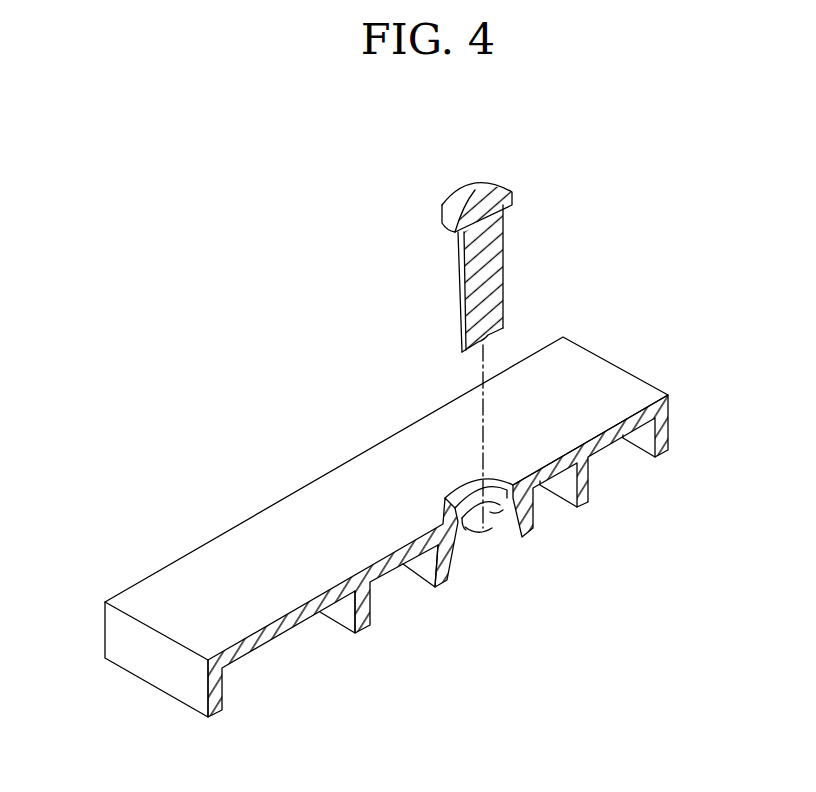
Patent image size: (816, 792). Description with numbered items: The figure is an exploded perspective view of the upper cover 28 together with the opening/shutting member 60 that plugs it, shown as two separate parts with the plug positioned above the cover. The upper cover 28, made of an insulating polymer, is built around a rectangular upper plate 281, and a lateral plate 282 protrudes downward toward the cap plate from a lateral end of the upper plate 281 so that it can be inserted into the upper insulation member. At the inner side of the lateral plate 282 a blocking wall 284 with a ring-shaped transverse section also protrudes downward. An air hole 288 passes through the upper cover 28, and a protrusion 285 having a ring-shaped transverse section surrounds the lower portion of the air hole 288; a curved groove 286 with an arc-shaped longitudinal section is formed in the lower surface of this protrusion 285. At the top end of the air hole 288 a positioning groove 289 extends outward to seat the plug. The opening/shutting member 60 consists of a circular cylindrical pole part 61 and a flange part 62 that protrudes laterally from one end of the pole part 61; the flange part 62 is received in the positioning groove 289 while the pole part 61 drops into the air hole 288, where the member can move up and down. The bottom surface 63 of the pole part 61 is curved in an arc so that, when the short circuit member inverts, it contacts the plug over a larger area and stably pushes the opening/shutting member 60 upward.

The upper cover 28 is at (391, 509).
The upper plate 281 is at (593, 380).
The lateral plate 282 is at (140, 655).
The blocking wall 284 is at (343, 612).
The protrusion 285 is at (415, 568).
The curved groove 286 is at (463, 562).
The air hole 288 is at (493, 508).
The positioning groove 289 is at (452, 502).
The opening/shutting member 60 is at (505, 226).
The pole part 61 is at (488, 237).
The flange part 62 is at (478, 195).
The bottom surface 63 is at (490, 338).